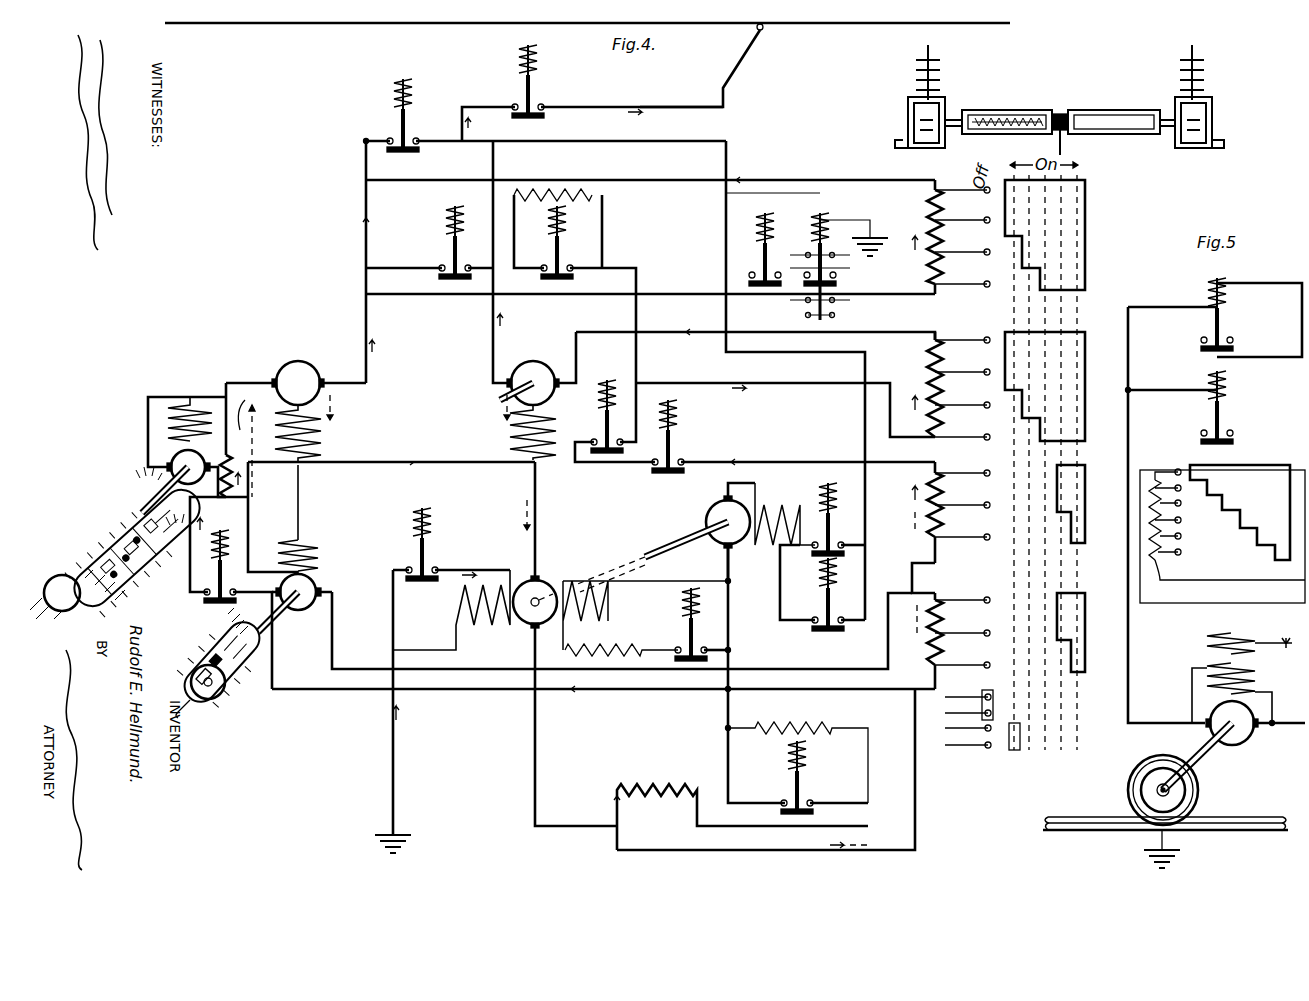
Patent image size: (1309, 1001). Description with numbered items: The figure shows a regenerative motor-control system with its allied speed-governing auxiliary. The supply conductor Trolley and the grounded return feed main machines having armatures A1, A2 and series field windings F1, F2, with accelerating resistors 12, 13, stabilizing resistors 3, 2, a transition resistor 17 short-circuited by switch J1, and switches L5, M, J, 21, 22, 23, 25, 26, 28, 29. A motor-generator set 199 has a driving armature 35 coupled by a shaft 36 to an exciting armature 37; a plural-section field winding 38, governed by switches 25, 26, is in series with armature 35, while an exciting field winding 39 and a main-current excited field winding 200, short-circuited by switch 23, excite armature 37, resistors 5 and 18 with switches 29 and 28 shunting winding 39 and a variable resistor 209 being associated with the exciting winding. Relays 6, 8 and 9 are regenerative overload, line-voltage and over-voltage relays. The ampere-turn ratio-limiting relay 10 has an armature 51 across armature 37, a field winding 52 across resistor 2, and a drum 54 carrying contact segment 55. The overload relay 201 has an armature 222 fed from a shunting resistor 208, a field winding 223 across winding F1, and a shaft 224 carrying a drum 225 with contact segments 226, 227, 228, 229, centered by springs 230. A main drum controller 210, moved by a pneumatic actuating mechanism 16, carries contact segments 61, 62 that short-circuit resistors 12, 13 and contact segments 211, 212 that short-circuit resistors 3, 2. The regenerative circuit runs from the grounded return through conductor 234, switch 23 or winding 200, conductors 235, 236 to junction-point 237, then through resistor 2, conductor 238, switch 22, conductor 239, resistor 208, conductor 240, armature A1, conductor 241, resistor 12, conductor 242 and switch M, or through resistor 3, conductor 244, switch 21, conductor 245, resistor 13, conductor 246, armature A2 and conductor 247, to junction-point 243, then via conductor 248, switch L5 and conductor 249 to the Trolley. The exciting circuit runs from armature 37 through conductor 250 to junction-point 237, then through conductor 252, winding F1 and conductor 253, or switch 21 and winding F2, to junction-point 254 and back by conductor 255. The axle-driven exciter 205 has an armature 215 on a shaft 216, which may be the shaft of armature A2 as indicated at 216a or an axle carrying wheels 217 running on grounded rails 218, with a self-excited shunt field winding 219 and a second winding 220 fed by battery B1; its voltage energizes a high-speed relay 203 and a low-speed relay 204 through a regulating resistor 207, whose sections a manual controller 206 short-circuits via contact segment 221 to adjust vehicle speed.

In FIG. 4, the supply-circuit conductor Trolley is at (382, 24).
In FIG. 4, the switch LS L5 is at (546, 81).
In FIG. 4, the switch M is at (393, 115).
In FIG. 4, the switch J is at (429, 242).
In FIG. 4, the switch J1 is at (575, 289).
In FIG. 4, the transition resistor 17 is at (600, 194).
In FIG. 4, the line-voltage relay 8 is at (773, 239).
In FIG. 4, the over-voltage relay 9 is at (839, 266).
In FIG. 4, the accelerating resistor 12 is at (941, 237).
In FIG. 4, the accelerating resistor 13 is at (942, 386).
In FIG. 4, the stabilizing resistor 3 is at (943, 512).
In FIG. 4, the stabilizing resistor 2 is at (922, 630).
In FIG. 4, the regenerative overload relay 6 is at (615, 421).
In FIG. 4, the switch 21 is at (681, 445).
In FIG. 4, the switch 23 is at (451, 544).
In FIG. 4, the switch 25 is at (838, 519).
In FIG. 4, the switch 26 is at (822, 588).
In FIG. 4, the switch 28 is at (824, 777).
In FIG. 4, the switch 29 is at (701, 624).
In FIG. 4, the switch 22 is at (238, 609).
In FIG. 4, the auxiliary circuit resistor 5 is at (622, 650).
In FIG. 4, the variable resistor 18 is at (838, 722).
In FIG. 4, the driving armature 35 is at (722, 532).
In FIG. 4, the shaft 36 is at (672, 545).
In FIG. 4, the exciting armature 37 is at (548, 582).
In FIG. 4, the plural-section field winding 38 is at (776, 508).
In FIG. 4, the exciting field winding 39 is at (645, 615).
In FIG. 4, the commutator-type armature 51 is at (305, 589).
In FIG. 4, the exciting field winding 52 is at (315, 548).
In FIG. 4, the drum 54 is at (264, 628).
In FIG. 4, the ampere-turn ratio-limiting relay 10 is at (222, 663).
In FIG. 4, the contact segment 55 is at (212, 660).
In FIG. 4, the actuating mechanism 16 is at (1059, 100).
In FIG. 4, the contact segment 61 is at (1045, 235).
In FIG. 4, the contact segment 62 is at (1045, 386).
In FIG. 4, the contact segment 211 is at (1070, 504).
In FIG. 4, the contact segment 212 is at (1071, 632).
In FIG. 4, the main armature A1 is at (296, 383).
In FIG. 4, the main armature A2 is at (533, 383).
In FIG. 4, the main field winding F1 is at (322, 436).
In FIG. 4, the main field winding F2 is at (517, 427).
In FIG. 4, the motor-generator set 199 is at (610, 561).
In FIG. 4, the main-current excited field winding 200 is at (451, 610).
In FIG. 4, the overload relay 201 is at (137, 544).
In FIG. 4, the main-circuit shunting resistor 208 is at (244, 487).
In FIG. 4, the variable resistor 209 is at (655, 782).
In FIG. 4, the shaft of armature A2 216a is at (492, 393).
In FIG. 4, the commutator-type armature 222 is at (187, 454).
In FIG. 4, the field winding 223 is at (186, 410).
In FIG. 4, the relay shaft 224 is at (137, 515).
In FIG. 4, the drum 225 is at (120, 585).
In FIG. 4, the contact segment 226 is at (113, 506).
In FIG. 4, the contact segment 227 is at (100, 530).
In FIG. 4, the contact segment 228 is at (82, 552).
In FIG. 4, the contact segment 229 is at (56, 586).
In FIG. 4, the centering springs 230 is at (160, 499).
In FIG. 4, the conductor 234 is at (402, 745).
In FIG. 4, the conductor 235 is at (528, 660).
In FIG. 4, the conductor 236 is at (782, 850).
In FIG. 4, the junction-point 237 is at (929, 578).
In FIG. 4, the conductor 238 is at (696, 688).
In FIG. 4, the conductor 239 is at (192, 556).
In FIG. 4, the conductor 240 is at (241, 369).
In FIG. 4, the conductor 241 is at (366, 321).
In FIG. 4, the conductor 242 is at (773, 172).
In FIG. 4, the junction-point 243 is at (571, 129).
In FIG. 4, the conductor 244 is at (808, 452).
In FIG. 4, the conductor 245 is at (785, 400).
In FIG. 4, the conductor 246 is at (745, 347).
In FIG. 4, the conductor 247 is at (493, 321).
In FIG. 4, the conductor 248 is at (488, 113).
In FIG. 4, the conductor 249 is at (675, 101).
In FIG. 4, the conductor 250 is at (487, 637).
In FIG. 4, the conductor 252 is at (241, 440).
In FIG. 4, the conductor 253 is at (368, 462).
In FIG. 4, the junction-point 254 is at (513, 479).
In FIG. 4, the conductor 255 is at (537, 508).
In FIG. 5, the main drum controller 210 is at (1172, 476).
In FIG. 5, the high-speed relay 203 is at (1251, 317).
In FIG. 5, the low-speed relay 204 is at (1199, 407).
In FIG. 5, the axle-driven exciter 205 is at (1280, 754).
In FIG. 5, the manual controller 206 is at (1222, 525).
In FIG. 5, the regulating resistor 207 is at (1227, 524).
In FIG. 5, the commutator-type armature 215 is at (1238, 726).
In FIG. 5, the shaft 216 is at (1208, 758).
In FIG. 5, the wheels 217 is at (1135, 793).
In FIG. 5, the track rails 218 is at (1165, 834).
In FIG. 5, the self-excited shunt field winding 219 is at (1242, 693).
In FIG. 5, the second field winding 220 is at (1249, 633).
In FIG. 5, the contact segment 221 is at (1240, 512).
In FIG. 5, the battery B1 is at (1290, 630).